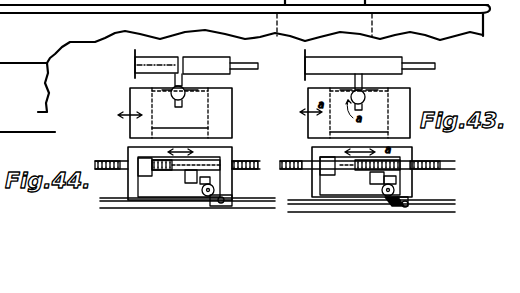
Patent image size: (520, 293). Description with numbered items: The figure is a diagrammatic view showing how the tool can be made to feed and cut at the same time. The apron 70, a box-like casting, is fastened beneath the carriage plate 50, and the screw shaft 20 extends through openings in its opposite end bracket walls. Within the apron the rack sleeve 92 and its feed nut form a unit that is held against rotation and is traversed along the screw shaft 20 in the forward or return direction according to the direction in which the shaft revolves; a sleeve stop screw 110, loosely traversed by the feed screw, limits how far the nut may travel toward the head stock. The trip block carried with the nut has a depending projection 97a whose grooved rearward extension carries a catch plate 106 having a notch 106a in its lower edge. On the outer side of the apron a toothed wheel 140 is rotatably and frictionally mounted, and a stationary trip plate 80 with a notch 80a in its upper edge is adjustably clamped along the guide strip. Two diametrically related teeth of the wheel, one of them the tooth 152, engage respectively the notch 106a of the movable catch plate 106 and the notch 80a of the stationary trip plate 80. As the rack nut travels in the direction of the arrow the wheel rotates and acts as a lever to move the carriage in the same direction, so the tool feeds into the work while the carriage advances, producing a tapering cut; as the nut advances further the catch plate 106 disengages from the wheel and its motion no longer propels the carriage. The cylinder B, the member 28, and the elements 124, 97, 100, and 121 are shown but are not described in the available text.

In FIG. 43, the frame member 28 is at (14, 105).
In FIG. 43, the cylinder B is at (370, 60).
In FIG. 44, the cylinder B is at (196, 59).
In FIG. 43, the carriage plate 50 is at (405, 99).
In FIG. 44, the carriage plate 50 is at (225, 118).
In FIG. 43, the slide block 124 is at (382, 95).
In FIG. 44, the slide block 124 is at (195, 101).
In FIG. 43, the apron 70 is at (313, 181).
In FIG. 44, the apron 70 is at (130, 183).
In FIG. 43, the screw shaft 20 is at (452, 163).
In FIG. 44, the screw shaft 20 is at (258, 164).
In FIG. 43, the slide 97 is at (375, 170).
In FIG. 43, the block 100 is at (379, 182).
In FIG. 43, the notch 106a is at (398, 178).
In FIG. 44, the notch 106a is at (212, 179).
In FIG. 43, the toothed wheel 140 is at (395, 190).
In FIG. 44, the toothed wheel 140 is at (215, 190).
In FIG. 43, the trip plate 80 is at (396, 207).
In FIG. 44, the trip plate 80 is at (218, 207).
In FIG. 43, the tooth 152 is at (408, 207).
In FIG. 43, the depending projection 97a is at (378, 172).
In FIG. 44, the depending projection 97a is at (196, 174).
In FIG. 43, the notch 80a is at (372, 206).
In FIG. 44, the notch 80a is at (233, 197).
In FIG. 44, the sleeve stop screw 110 is at (130, 160).
In FIG. 44, the rack sleeve 92 is at (180, 172).
In FIG. 44, the catch plate 106 is at (191, 184).
In FIG. 44, the lever 121 is at (203, 192).